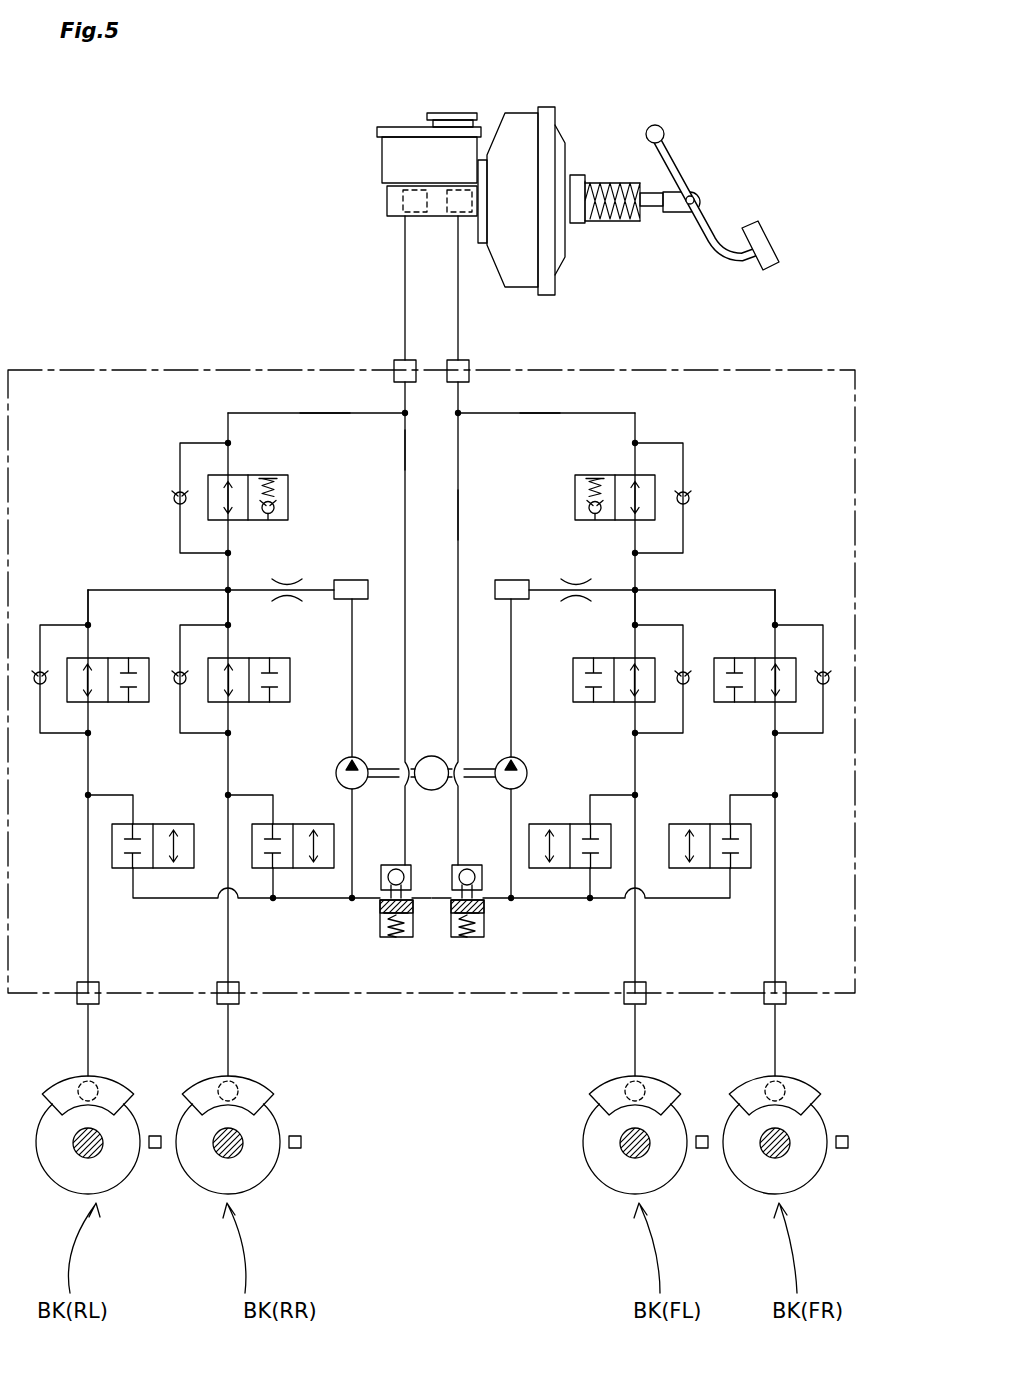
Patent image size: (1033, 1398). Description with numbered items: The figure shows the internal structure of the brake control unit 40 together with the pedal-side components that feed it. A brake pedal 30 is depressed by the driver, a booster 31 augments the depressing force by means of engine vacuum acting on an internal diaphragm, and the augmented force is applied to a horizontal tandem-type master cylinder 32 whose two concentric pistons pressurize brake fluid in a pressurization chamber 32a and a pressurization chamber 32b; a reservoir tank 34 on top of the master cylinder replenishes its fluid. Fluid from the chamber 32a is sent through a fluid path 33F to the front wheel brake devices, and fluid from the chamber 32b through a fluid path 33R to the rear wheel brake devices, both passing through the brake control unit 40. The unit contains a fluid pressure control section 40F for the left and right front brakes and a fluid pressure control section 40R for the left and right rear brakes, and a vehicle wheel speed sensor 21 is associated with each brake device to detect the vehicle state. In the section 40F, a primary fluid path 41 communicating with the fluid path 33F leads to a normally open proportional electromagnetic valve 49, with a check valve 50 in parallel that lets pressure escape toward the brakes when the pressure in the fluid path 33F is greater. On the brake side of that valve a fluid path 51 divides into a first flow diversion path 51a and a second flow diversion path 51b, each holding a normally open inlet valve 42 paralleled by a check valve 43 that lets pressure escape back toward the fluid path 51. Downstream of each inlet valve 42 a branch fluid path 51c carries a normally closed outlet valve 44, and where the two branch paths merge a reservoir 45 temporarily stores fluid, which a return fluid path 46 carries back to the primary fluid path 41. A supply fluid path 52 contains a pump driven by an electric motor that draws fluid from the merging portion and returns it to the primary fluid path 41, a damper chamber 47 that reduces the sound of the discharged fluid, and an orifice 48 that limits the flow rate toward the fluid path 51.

The vehicle wheel speed sensor 21 is at (155, 1150).
The brake pedal 30 is at (772, 240).
The booster 31 is at (518, 290).
The tandem-type master cylinder 32 is at (387, 203).
The pressurization chamber 32a is at (446, 214).
The pressurization chamber 32b is at (402, 211).
The fluid path 33R is at (404, 320).
The fluid path 33F is at (462, 323).
The reservoir tank 34 is at (388, 163).
The brake control unit 40 is at (232, 372).
The fluid pressure control section 40R is at (133, 391).
The fluid pressure control section 40F is at (745, 395).
The primary fluid path 41 is at (330, 412).
The inlet valve 42 is at (135, 703).
The check valve 43 is at (40, 690).
The outlet valve 44 is at (175, 823).
The reservoir 45 is at (384, 930).
The return fluid path 46 is at (404, 454).
The damper chamber 47 is at (352, 578).
The orifice 48 is at (285, 579).
The proportional electromagnetic valve 49 is at (290, 506).
The check valve 50 is at (178, 492).
The fluid path 51 is at (227, 577).
The first flow diversion path 51a is at (88, 612).
The second flow diversion path 51b is at (227, 604).
The branch fluid path 51c is at (253, 795).
The supply fluid path 52 is at (352, 675).